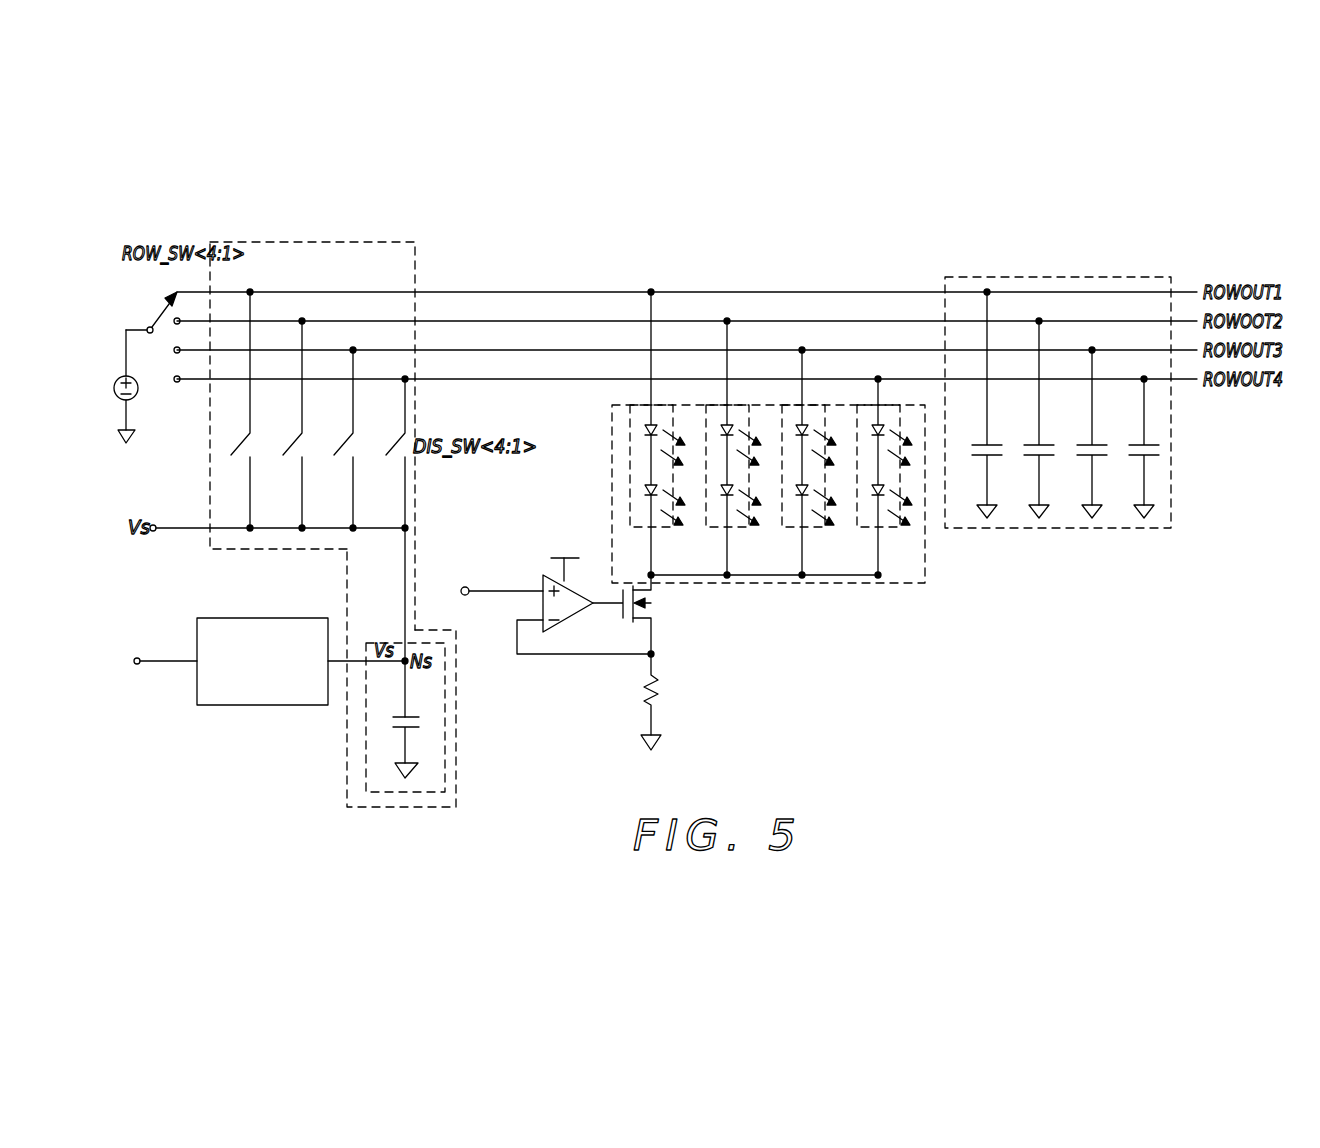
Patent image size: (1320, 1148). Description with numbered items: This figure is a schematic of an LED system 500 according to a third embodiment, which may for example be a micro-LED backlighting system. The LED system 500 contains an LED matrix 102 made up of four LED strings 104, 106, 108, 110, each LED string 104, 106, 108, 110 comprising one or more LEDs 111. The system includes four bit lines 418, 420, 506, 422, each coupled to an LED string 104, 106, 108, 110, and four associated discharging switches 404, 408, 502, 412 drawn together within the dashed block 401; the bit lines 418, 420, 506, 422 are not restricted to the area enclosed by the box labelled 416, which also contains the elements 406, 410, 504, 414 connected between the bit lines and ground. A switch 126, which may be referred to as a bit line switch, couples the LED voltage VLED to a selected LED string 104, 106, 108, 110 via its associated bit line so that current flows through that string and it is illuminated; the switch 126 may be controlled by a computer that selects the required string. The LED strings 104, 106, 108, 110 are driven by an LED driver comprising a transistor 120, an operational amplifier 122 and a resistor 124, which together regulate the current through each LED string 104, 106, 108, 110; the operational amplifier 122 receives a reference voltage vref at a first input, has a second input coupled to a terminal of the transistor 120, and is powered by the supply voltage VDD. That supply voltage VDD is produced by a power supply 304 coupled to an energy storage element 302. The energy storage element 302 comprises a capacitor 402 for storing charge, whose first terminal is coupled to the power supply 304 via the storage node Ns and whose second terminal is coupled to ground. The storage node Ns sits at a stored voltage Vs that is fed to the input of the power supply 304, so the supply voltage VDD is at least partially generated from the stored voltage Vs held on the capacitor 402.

The LED system 500 is at (320, 192).
The row switch block 401 is at (276, 242).
The switch 126 is at (156, 322).
The discharging switch 404 is at (233, 449).
The discharging switch 408 is at (285, 449).
The discharging switch 502 is at (336, 449).
The discharging switch 412 is at (388, 449).
The power supply 304 is at (276, 618).
The capacitor 402 is at (393, 731).
The energy storage element 302 is at (454, 720).
The operational amplifier 122 is at (541, 596).
The transistor 120 is at (635, 625).
The resistor 124 is at (662, 680).
The LED matrix 102 is at (752, 583).
The LED string 104 is at (663, 528).
The LED string 106 is at (739, 528).
The LED string 108 is at (814, 528).
The LED string 110 is at (890, 528).
The LED 111 is at (647, 425).
The bit line 418 is at (975, 292).
The bit line 420 is at (1016, 321).
The bit line 506 is at (1070, 350).
The bit line 422 is at (1120, 379).
The row capacitor 406 is at (974, 447).
The row capacitor 410 is at (1026, 447).
The row capacitor 504 is at (1079, 447).
The row capacitor 414 is at (1131, 447).
The box 416 is at (1077, 529).